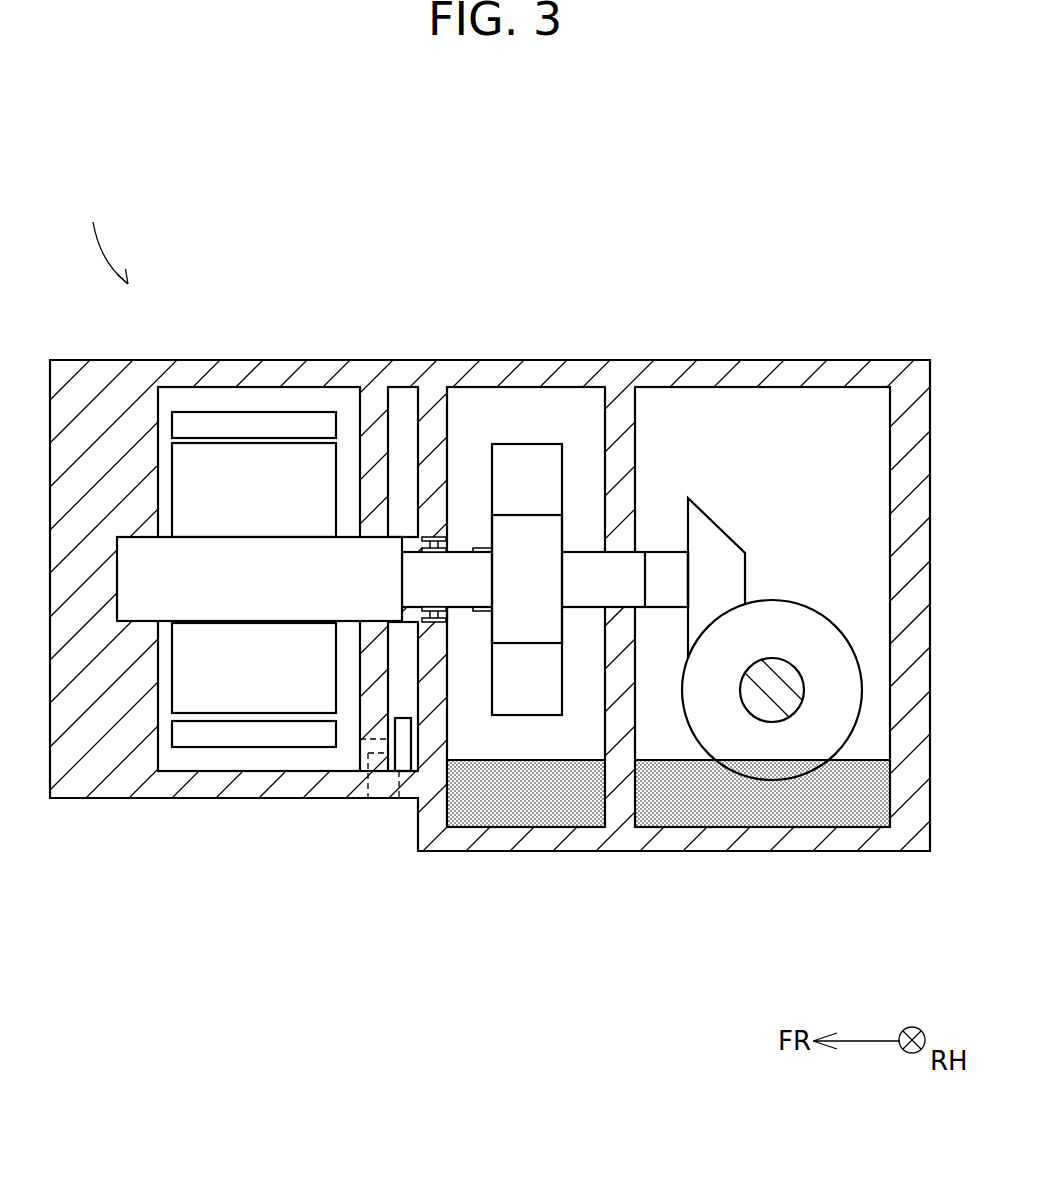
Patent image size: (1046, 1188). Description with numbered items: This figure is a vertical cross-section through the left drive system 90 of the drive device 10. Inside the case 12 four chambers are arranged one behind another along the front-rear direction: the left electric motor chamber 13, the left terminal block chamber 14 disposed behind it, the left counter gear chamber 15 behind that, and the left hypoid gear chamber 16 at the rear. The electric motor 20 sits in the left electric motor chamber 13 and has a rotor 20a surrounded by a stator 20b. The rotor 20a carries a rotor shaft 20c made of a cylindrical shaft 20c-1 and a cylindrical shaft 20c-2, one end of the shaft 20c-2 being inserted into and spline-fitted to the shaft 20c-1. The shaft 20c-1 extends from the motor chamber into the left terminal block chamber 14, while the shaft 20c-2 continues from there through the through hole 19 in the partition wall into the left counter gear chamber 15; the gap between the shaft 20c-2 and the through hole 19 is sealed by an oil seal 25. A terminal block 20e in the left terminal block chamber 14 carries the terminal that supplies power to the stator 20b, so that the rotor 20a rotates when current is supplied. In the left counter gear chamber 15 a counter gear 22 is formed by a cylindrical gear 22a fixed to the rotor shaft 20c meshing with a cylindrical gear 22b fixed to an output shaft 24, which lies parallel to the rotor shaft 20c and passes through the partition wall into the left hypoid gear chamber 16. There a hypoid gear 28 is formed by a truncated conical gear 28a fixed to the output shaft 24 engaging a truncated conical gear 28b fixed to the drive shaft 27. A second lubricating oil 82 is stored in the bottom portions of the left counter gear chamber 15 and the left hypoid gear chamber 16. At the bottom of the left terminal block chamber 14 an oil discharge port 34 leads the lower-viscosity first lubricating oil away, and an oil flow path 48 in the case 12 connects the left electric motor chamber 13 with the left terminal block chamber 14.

The drive device 10 is at (77, 153).
The left drive system 90 is at (97, 236).
The case 12 is at (257, 788).
The left electric motor chamber 13 is at (200, 757).
The left terminal block chamber 14 is at (398, 693).
The left counter gear chamber 15 is at (540, 735).
The left hypoid gear chamber 16 is at (670, 737).
The through hole 19 is at (457, 627).
The electric motor 20 is at (270, 245).
The rotor 20a is at (227, 477).
The stator 20b is at (288, 424).
The rotor shaft 20c is at (493, 247).
The shaft 20c-1 is at (352, 563).
The shaft 20c-2 is at (412, 567).
The terminal block 20e is at (380, 775).
The counter gear 22 is at (655, 247).
The gear 22a is at (508, 557).
The gear 22b is at (545, 475).
The output shaft 24 is at (663, 570).
The oil seal 25 is at (426, 625).
The drive shaft 27 is at (777, 697).
The hypoid gear 28 is at (870, 247).
The gear 28a is at (712, 557).
The gear 28b is at (762, 628).
The oil discharge port 34 is at (403, 775).
The oil flow path 48 is at (387, 765).
The second lubricating oil 82 is at (658, 807).